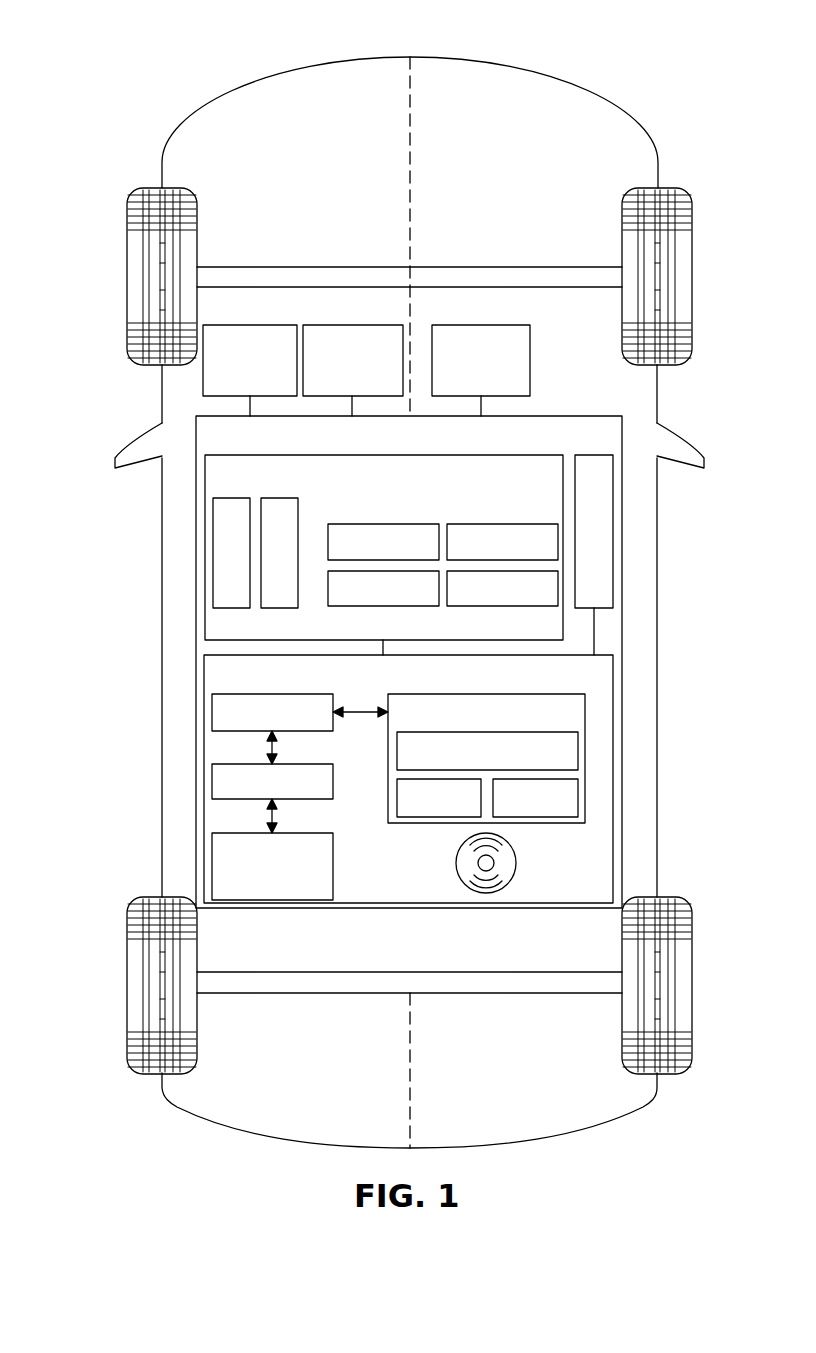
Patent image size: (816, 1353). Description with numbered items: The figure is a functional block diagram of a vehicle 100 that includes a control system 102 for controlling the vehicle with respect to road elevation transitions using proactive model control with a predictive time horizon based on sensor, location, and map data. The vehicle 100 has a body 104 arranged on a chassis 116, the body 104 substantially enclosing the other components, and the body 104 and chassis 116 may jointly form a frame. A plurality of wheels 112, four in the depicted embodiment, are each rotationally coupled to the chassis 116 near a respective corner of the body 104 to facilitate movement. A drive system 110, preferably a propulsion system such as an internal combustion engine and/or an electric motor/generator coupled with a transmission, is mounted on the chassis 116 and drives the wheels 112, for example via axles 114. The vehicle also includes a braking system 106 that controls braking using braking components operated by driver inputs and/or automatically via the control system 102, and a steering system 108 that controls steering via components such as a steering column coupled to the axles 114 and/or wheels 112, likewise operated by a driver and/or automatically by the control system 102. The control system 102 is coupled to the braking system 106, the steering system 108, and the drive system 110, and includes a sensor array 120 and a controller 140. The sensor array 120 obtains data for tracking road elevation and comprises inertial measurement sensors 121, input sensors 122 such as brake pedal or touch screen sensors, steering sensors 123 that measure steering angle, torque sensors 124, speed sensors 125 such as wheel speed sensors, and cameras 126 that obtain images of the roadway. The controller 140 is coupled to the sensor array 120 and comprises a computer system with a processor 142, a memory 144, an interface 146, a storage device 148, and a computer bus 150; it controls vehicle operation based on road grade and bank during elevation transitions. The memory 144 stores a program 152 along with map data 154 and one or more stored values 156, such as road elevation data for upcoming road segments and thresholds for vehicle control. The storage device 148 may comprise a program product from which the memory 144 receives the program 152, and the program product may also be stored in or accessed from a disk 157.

The vehicle 100 is at (651, 44).
The control system 102 is at (567, 415).
The body 104 is at (162, 496).
The braking system 106 is at (273, 323).
The steering system 108 is at (373, 323).
The drive system 110 is at (480, 323).
The wheels 112 is at (127, 262).
The axles 114 is at (276, 272).
The chassis 116 is at (413, 112).
The sensor array 120 is at (515, 453).
The inertial measurement sensors 121 is at (213, 567).
The input sensors 122 is at (282, 498).
The steering sensors 123 is at (392, 523).
The torque sensors 124 is at (388, 606).
The speed sensors 125 is at (487, 523).
The cameras 126 is at (492, 606).
The controller 140 is at (204, 668).
The processor 142 is at (212, 712).
The memory 144 is at (585, 703).
The interface 146 is at (212, 783).
The storage device 148 is at (212, 845).
The computer bus 150 is at (263, 747).
The program 152 is at (578, 748).
The map data 154 is at (447, 817).
The stored values 156 is at (578, 795).
The disk 157 is at (516, 863).